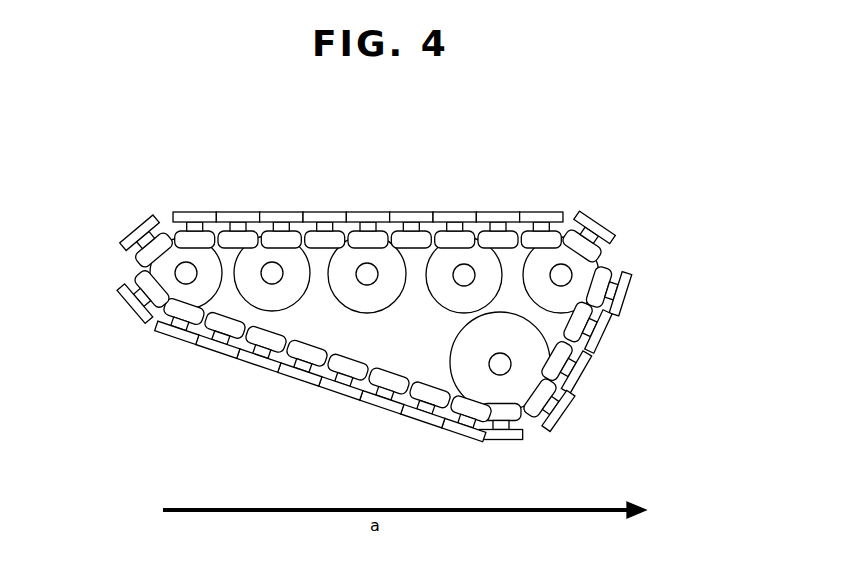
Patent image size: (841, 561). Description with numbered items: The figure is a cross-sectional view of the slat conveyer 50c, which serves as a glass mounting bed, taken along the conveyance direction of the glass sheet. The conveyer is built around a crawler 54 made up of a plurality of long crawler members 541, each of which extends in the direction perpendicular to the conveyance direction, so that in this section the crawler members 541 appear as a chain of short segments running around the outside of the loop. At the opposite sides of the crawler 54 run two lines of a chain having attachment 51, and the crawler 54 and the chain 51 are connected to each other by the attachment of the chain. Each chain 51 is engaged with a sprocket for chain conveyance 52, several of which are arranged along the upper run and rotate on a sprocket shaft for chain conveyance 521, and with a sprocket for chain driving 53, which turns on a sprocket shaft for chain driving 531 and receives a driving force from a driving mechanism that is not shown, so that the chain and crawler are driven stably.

The slat conveyer 50c is at (583, 154).
The chain having attachment 51 is at (548, 232).
The sprocket for chain conveyance 52 is at (208, 298).
The sprocket shaft for chain conveyance 521 is at (177, 268).
The sprocket for chain driving 53 is at (452, 372).
The sprocket shaft for chain driving 531 is at (501, 353).
The crawler 54 is at (407, 327).
The crawler member 541 is at (324, 212).